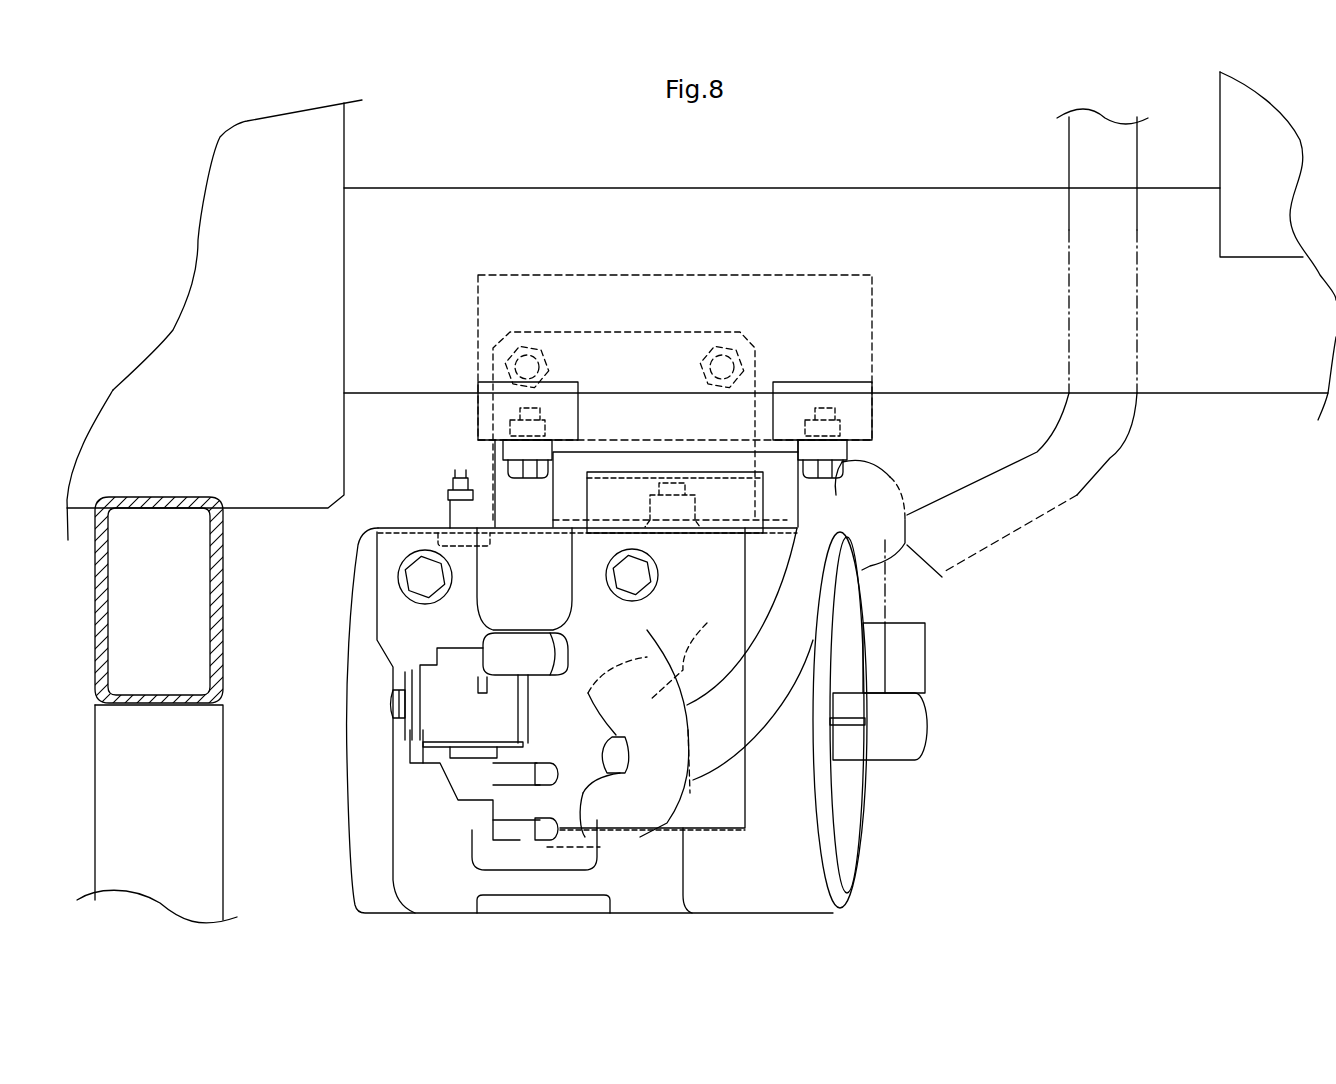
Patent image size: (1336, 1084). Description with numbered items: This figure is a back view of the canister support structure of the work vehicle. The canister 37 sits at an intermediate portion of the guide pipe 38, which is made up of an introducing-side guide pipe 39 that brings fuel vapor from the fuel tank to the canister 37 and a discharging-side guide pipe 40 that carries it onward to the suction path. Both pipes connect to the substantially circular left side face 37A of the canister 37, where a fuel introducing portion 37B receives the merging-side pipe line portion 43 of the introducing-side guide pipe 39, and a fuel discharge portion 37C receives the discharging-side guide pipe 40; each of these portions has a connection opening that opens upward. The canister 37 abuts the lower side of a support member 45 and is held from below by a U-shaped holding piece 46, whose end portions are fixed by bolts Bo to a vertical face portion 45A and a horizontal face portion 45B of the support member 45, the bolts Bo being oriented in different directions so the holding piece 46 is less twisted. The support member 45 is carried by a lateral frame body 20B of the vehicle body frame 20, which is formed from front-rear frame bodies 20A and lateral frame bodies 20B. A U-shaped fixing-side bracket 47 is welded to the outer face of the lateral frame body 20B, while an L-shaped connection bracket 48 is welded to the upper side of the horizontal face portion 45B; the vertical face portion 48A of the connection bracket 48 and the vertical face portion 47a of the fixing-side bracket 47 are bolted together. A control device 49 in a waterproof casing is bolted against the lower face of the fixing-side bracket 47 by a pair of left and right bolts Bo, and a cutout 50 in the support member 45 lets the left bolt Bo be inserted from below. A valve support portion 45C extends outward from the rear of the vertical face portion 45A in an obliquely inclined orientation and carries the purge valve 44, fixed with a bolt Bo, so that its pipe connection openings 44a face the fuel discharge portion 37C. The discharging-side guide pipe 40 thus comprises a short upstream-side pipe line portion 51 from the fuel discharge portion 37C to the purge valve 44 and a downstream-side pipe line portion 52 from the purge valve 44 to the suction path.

The vehicle body frame 20 is at (701, 497).
The front-rear frame body 20A is at (223, 527).
The lateral frame body 20B is at (725, 193).
The merging-side pipe line portion 43 is at (1069, 293).
The guide pipe 38 is at (944, 638).
The introducing-side guide pipe 39 is at (1112, 460).
The discharging-side guide pipe 40 is at (690, 800).
The fixing-side bracket 47 is at (880, 412).
The vertical face portion 47a is at (535, 275).
The connection bracket 48 is at (640, 406).
The vertical face portion 48A is at (650, 340).
The control device 49 is at (627, 462).
The canister 37 is at (648, 684).
The left side face 37A is at (853, 795).
The fuel introducing portion 37B is at (880, 640).
The fuel discharge portion 37C is at (878, 672).
The support member 45 is at (373, 597).
The vertical face portion 45A is at (393, 640).
The horizontal face portion 45B is at (413, 525).
The valve support portion 45C is at (405, 742).
The purge valve 44 is at (507, 707).
The pipe connection openings 44a is at (513, 829).
The holding piece 46 is at (413, 878).
The cutout 50 is at (542, 572).
The upstream-side pipe line portion 51 is at (770, 600).
The downstream-side pipe line portion 52 is at (686, 647).
The bolt Bo is at (462, 478).